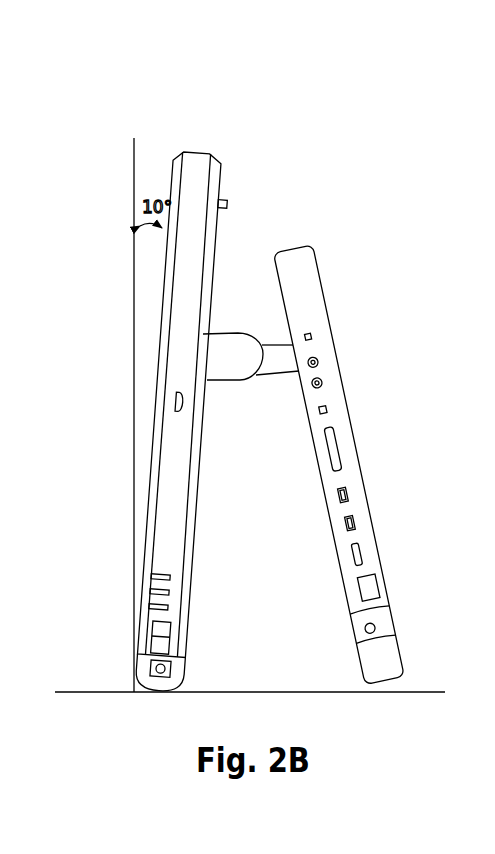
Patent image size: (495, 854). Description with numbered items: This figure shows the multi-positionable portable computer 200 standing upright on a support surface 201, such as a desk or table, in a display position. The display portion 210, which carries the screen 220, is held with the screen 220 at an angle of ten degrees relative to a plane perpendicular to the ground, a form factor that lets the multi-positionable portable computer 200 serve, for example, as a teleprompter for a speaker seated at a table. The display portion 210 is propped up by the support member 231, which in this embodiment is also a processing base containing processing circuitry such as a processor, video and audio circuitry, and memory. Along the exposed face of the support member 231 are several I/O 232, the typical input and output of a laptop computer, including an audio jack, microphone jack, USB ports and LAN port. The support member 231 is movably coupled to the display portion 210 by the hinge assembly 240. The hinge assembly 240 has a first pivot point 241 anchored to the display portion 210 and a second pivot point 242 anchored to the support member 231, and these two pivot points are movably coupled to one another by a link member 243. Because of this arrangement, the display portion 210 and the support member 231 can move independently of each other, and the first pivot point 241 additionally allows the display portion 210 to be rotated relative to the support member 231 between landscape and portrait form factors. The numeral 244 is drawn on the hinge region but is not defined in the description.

The multi-positionable portable computer 200 is at (100, 121).
The support surface 201 is at (310, 692).
The display portion 210 is at (158, 500).
The screen 220 is at (153, 418).
The support member 231 is at (323, 290).
The I/O 232 is at (352, 490).
The hinge assembly 240 is at (251, 385).
The first pivot point 241 is at (253, 363).
The second pivot point 242 is at (300, 366).
The link member 243 is at (275, 352).
The finger top edge 244 is at (207, 342).